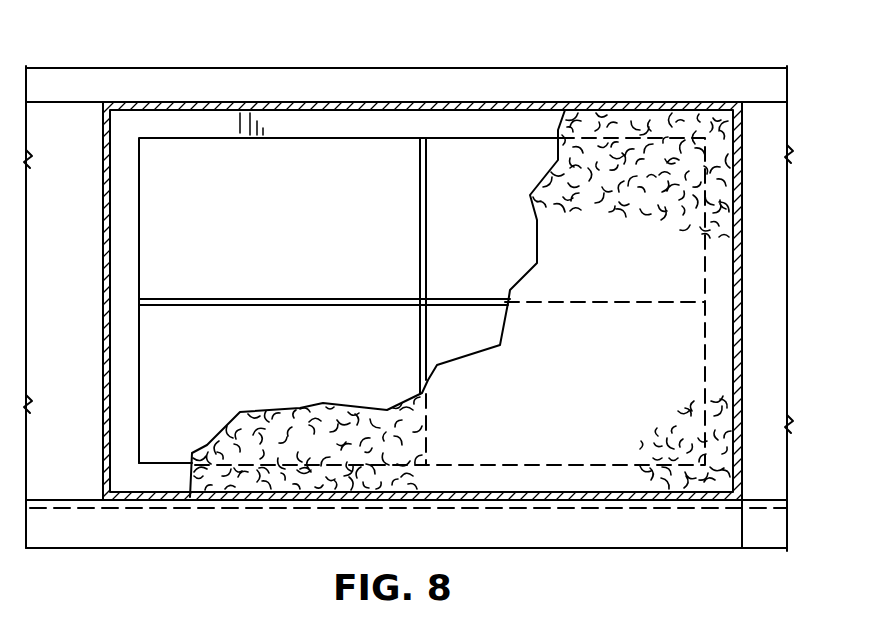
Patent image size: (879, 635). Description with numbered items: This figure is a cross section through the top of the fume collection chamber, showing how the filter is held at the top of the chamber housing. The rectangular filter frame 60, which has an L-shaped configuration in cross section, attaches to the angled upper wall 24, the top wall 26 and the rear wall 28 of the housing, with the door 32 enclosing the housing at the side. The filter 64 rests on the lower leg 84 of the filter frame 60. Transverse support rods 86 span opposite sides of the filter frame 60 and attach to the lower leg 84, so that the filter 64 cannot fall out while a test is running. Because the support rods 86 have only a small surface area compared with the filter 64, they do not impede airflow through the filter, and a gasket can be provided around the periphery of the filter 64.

The angled upper wall 24 is at (777, 365).
The top wall 26 is at (48, 135).
The rear wall 28 is at (80, 102).
The door 32 is at (173, 545).
The filter frame 60 is at (477, 100).
The filter 64 is at (630, 175).
The lower leg 84 is at (536, 120).
The transverse support rods 86 is at (385, 300).